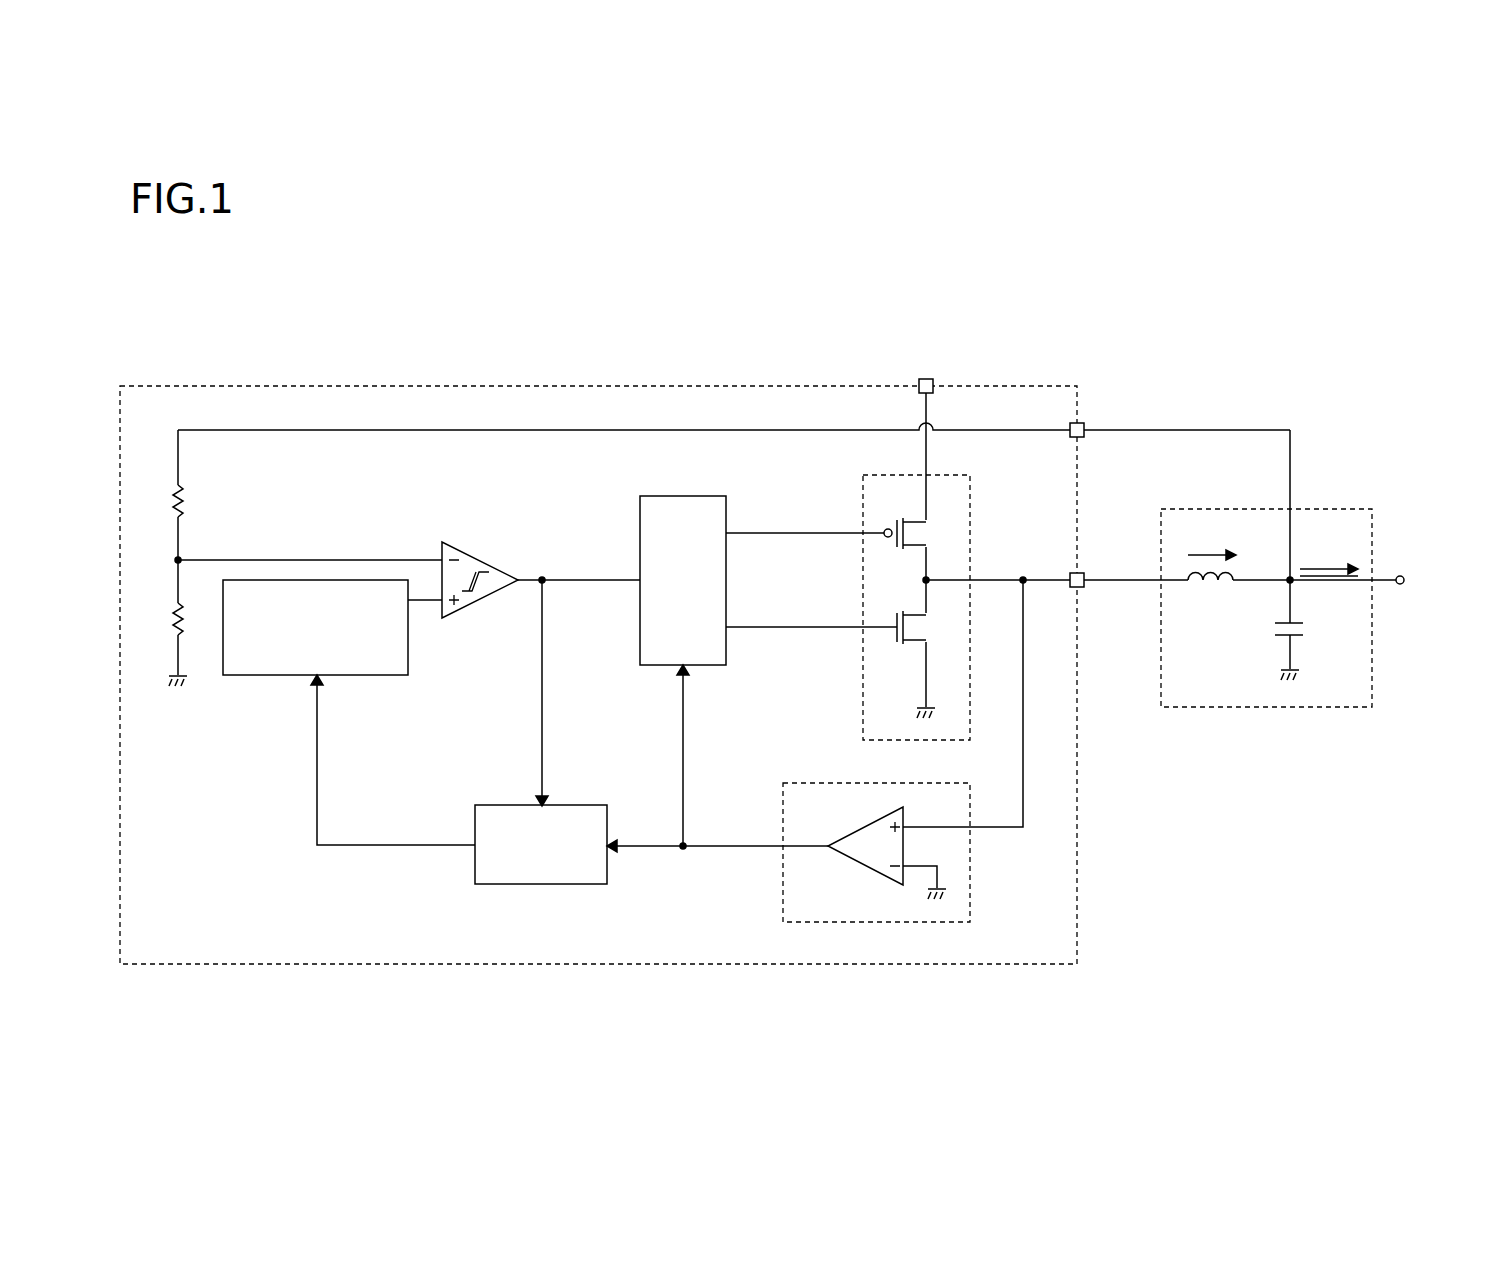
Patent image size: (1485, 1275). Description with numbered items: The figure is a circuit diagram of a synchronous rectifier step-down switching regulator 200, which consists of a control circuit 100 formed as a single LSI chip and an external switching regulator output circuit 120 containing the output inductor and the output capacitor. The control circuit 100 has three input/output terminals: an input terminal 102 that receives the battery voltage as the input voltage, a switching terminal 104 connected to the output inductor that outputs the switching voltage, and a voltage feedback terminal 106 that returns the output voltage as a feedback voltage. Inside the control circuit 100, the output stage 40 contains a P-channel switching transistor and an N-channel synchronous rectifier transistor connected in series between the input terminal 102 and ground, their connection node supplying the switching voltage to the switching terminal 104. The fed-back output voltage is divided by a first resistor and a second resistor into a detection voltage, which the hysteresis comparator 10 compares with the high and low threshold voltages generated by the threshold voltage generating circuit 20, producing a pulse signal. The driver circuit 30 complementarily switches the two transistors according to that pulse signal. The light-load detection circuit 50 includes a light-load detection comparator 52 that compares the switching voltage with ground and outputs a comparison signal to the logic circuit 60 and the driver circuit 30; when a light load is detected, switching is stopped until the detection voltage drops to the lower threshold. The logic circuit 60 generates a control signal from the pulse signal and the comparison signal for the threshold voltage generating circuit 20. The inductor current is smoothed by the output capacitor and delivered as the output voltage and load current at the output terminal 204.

The hysteresis comparator 10 is at (476, 607).
The threshold voltage generating circuit 20 is at (355, 675).
The driver circuit 30 is at (683, 496).
The output stage 40 is at (970, 500).
The light-load detection circuit 50 is at (903, 852).
The light-load detection comparator 52 is at (865, 868).
The logic circuit 60 is at (540, 884).
The control circuit 100 is at (605, 964).
The input terminal 102 is at (933, 383).
The switching terminal 104 is at (1084, 574).
The voltage feedback terminal 106 is at (1084, 425).
The switching regulator output circuit 120 is at (1265, 707).
The step-down switching regulator 200 is at (810, 1062).
The output terminal 204 is at (1406, 576).